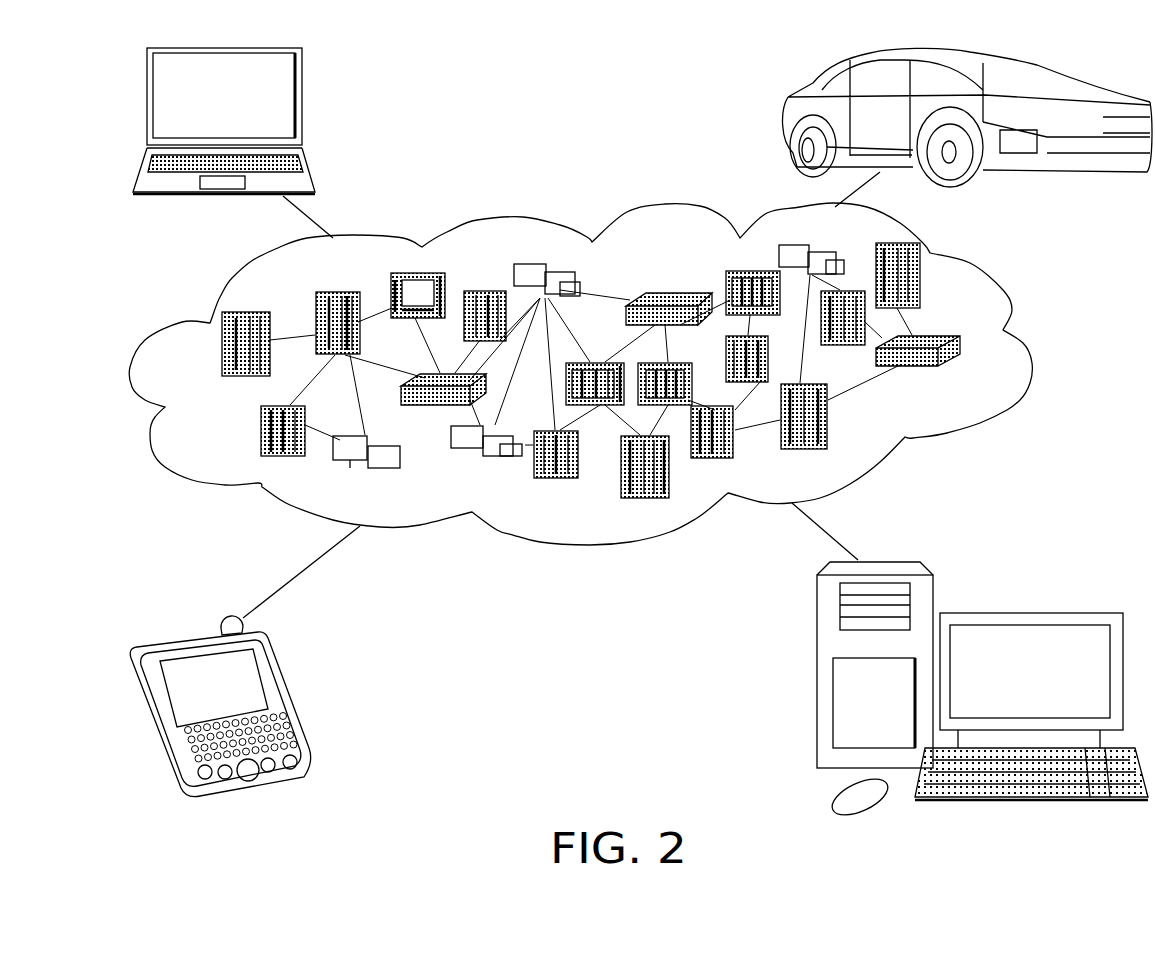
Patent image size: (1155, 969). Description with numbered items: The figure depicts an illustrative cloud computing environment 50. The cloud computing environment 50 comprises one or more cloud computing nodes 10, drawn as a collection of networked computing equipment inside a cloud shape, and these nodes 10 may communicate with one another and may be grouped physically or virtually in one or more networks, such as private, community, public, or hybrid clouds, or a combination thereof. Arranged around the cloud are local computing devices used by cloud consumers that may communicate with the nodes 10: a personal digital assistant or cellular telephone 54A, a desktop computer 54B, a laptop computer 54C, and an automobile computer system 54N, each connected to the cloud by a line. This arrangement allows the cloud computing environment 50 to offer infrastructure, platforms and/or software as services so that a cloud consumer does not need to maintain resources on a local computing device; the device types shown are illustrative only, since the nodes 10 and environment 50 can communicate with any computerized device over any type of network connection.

The cloud computing environment 50 is at (1033, 358).
The cloud computing nodes 10 is at (966, 380).
The personal digital assistant or cellular telephone 54A is at (301, 702).
The desktop computer 54B is at (1027, 613).
The laptop computer 54C is at (301, 106).
The automobile computer system 54N is at (785, 122).